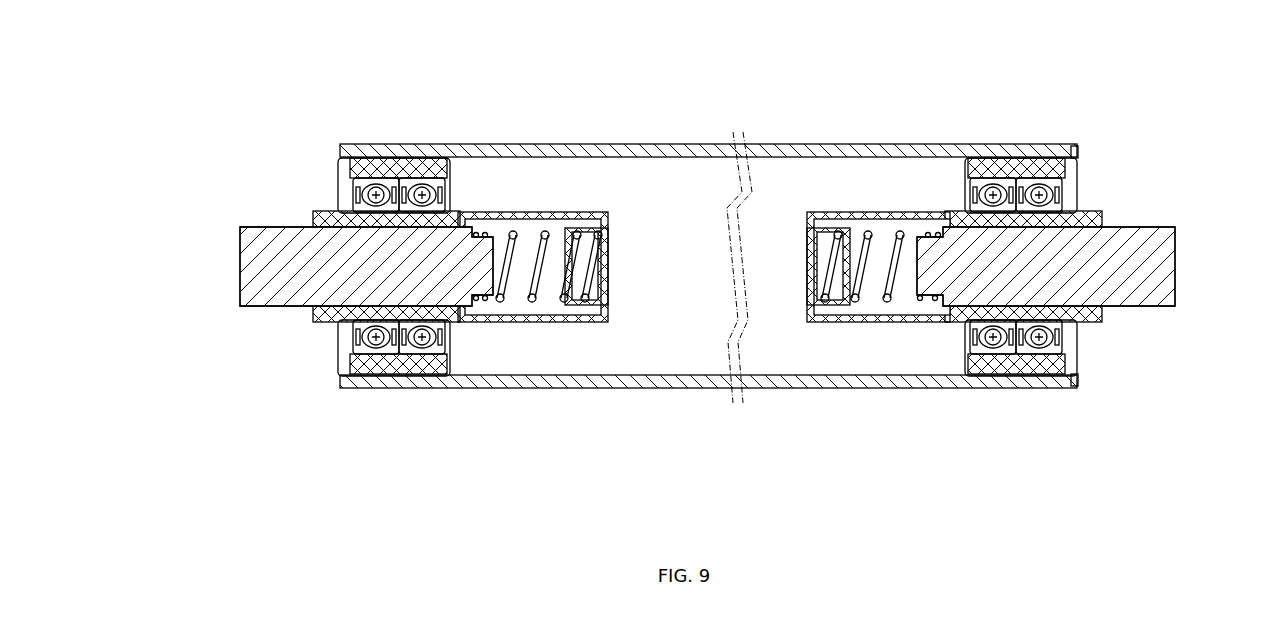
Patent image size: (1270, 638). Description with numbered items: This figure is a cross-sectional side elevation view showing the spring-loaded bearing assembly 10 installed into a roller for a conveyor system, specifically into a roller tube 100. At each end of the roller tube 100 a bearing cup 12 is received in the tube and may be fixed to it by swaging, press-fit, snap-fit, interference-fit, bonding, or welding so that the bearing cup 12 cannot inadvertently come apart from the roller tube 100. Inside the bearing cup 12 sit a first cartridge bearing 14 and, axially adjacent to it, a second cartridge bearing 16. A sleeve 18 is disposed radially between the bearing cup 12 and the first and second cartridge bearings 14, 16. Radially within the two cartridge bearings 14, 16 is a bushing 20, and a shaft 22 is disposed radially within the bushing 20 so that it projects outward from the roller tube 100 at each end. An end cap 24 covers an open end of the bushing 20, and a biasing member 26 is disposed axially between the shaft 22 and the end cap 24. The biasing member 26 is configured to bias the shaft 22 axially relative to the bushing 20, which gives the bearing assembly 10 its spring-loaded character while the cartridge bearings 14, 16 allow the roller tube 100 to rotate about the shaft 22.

The spring-loaded bearing assembly 10 is at (297, 348).
The bearing cup 12 is at (1075, 148).
The first cartridge bearing 14 is at (992, 180).
The second cartridge bearing 16 is at (1037, 182).
The sleeve 18 is at (1067, 170).
The bushing 20 is at (898, 320).
The shaft 22 is at (268, 268).
The end cap 24 is at (815, 217).
The biasing member 26 is at (895, 258).
The roller tube 100 is at (655, 188).